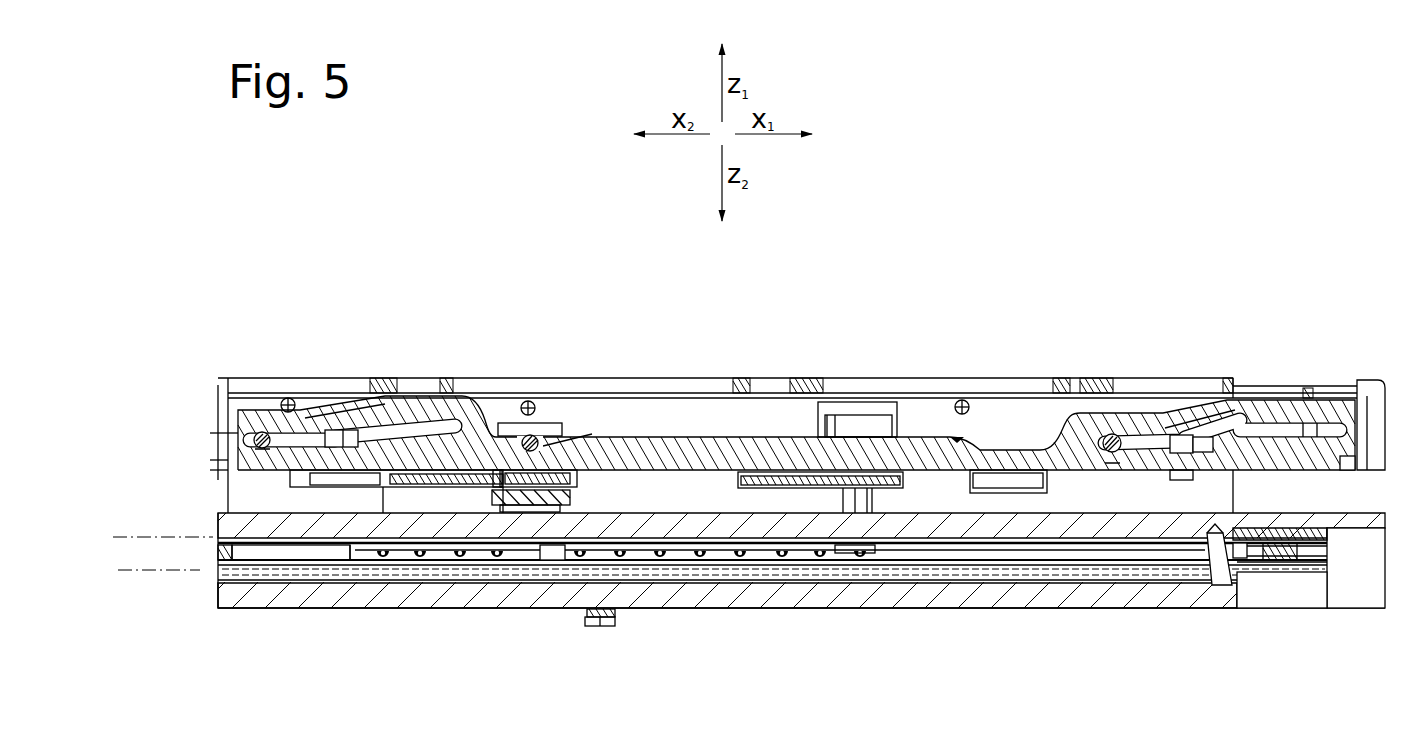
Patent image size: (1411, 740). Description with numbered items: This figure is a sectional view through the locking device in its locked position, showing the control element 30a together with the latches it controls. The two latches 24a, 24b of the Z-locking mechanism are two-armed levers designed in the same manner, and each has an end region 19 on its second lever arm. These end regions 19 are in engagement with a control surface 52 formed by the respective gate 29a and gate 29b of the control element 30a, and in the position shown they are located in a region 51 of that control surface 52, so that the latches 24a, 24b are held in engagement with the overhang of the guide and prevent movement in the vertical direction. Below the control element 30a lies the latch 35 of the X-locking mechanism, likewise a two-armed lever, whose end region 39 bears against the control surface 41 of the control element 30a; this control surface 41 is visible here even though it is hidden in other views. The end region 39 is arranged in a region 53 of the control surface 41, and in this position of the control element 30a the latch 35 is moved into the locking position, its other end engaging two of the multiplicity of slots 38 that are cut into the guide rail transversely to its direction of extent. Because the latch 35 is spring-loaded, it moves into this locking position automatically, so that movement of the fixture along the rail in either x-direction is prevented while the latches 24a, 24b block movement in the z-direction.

The end region 19 is at (265, 431).
The latch 24a is at (1140, 428).
The latch 24b is at (248, 410).
The gate 29a is at (1278, 428).
The gate 29b is at (418, 425).
The control element 30a is at (921, 449).
The latch 35 is at (567, 423).
The slot 38 is at (782, 560).
The end region 39 is at (538, 421).
The control surface 41 is at (745, 437).
The region 51 is at (262, 455).
The control surface 52 is at (340, 425).
The region 53 is at (552, 478).